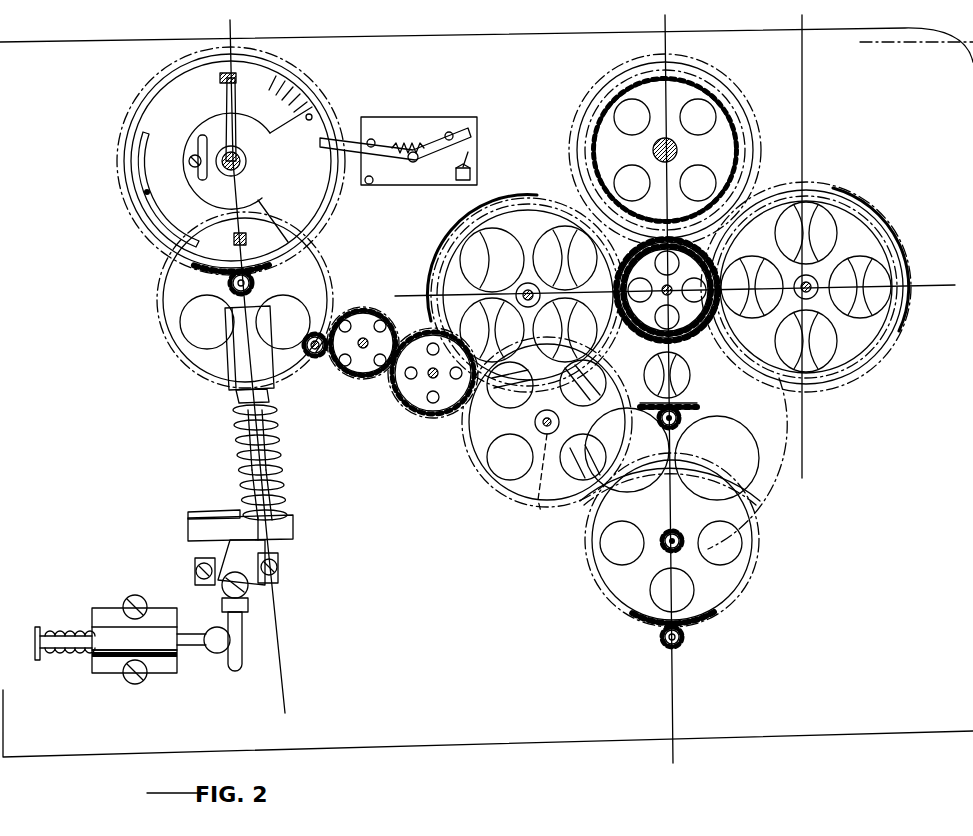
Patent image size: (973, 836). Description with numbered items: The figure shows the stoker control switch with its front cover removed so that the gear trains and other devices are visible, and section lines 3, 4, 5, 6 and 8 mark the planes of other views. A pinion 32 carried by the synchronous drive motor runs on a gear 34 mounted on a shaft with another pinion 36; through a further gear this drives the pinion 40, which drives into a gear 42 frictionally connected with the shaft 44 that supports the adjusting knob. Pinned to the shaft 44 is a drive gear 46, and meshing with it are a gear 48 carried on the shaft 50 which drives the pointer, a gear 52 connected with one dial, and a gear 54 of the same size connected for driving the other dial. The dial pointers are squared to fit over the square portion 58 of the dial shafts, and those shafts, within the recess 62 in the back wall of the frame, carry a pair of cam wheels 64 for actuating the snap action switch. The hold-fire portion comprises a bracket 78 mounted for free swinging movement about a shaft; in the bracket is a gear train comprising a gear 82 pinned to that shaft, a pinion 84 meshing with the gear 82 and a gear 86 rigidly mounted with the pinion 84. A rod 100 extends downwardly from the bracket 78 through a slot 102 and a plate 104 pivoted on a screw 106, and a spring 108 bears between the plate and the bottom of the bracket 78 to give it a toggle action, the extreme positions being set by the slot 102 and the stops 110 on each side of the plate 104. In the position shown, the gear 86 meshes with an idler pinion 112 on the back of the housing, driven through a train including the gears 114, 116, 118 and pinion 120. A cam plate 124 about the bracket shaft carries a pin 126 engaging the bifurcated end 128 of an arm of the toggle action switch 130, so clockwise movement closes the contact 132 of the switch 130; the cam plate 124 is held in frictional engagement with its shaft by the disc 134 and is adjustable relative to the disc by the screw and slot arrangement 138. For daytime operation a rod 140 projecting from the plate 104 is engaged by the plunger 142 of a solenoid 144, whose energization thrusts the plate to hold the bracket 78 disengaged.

The pinion 32 is at (683, 638).
The gear 34 is at (728, 585).
The pinion 36 is at (663, 547).
The pinion 40 is at (676, 424).
The gear 42 is at (720, 383).
The shaft 44 is at (672, 298).
The drive gear 46 is at (650, 325).
The gear 48 is at (722, 120).
The shaft 50 is at (678, 152).
The gear 52 is at (765, 246).
The gear 54 is at (535, 208).
The square portion 58 is at (765, 470).
The recess 62 is at (757, 184).
The cam wheels 64 is at (498, 264).
The bracket 78 is at (230, 376).
The gear 82 is at (600, 98).
The pinion 84 is at (253, 286).
The gear 86 is at (313, 285).
The rod 100 is at (270, 490).
The slot 102 is at (238, 514).
The plate 104 is at (290, 536).
The screw 106 is at (250, 587).
The spring 108 is at (270, 448).
The stops 110 is at (195, 560).
The idler pinion 112 is at (312, 360).
The gear 114 is at (362, 375).
The gear 116 is at (425, 405).
The gear 118 is at (483, 460).
The pinion 120 is at (522, 484).
The cam plate 124 is at (205, 193).
The pin 126 is at (312, 117).
The bifurcated end 128 is at (358, 135).
The toggle action switch 130 is at (410, 167).
The contact 132 is at (452, 148).
The disc 134 is at (160, 110).
The screw and slot arrangement 138 is at (192, 163).
The rod 140 is at (240, 662).
The plunger 142 is at (215, 652).
The solenoid 144 is at (112, 627).
The section line 3- 3 is at (620, 17).
The section line 4- 4 is at (190, 30).
The section line 5- 5 is at (916, 28).
The section line 6- 6 is at (405, 323).
The section line 8- 8 is at (755, 15).